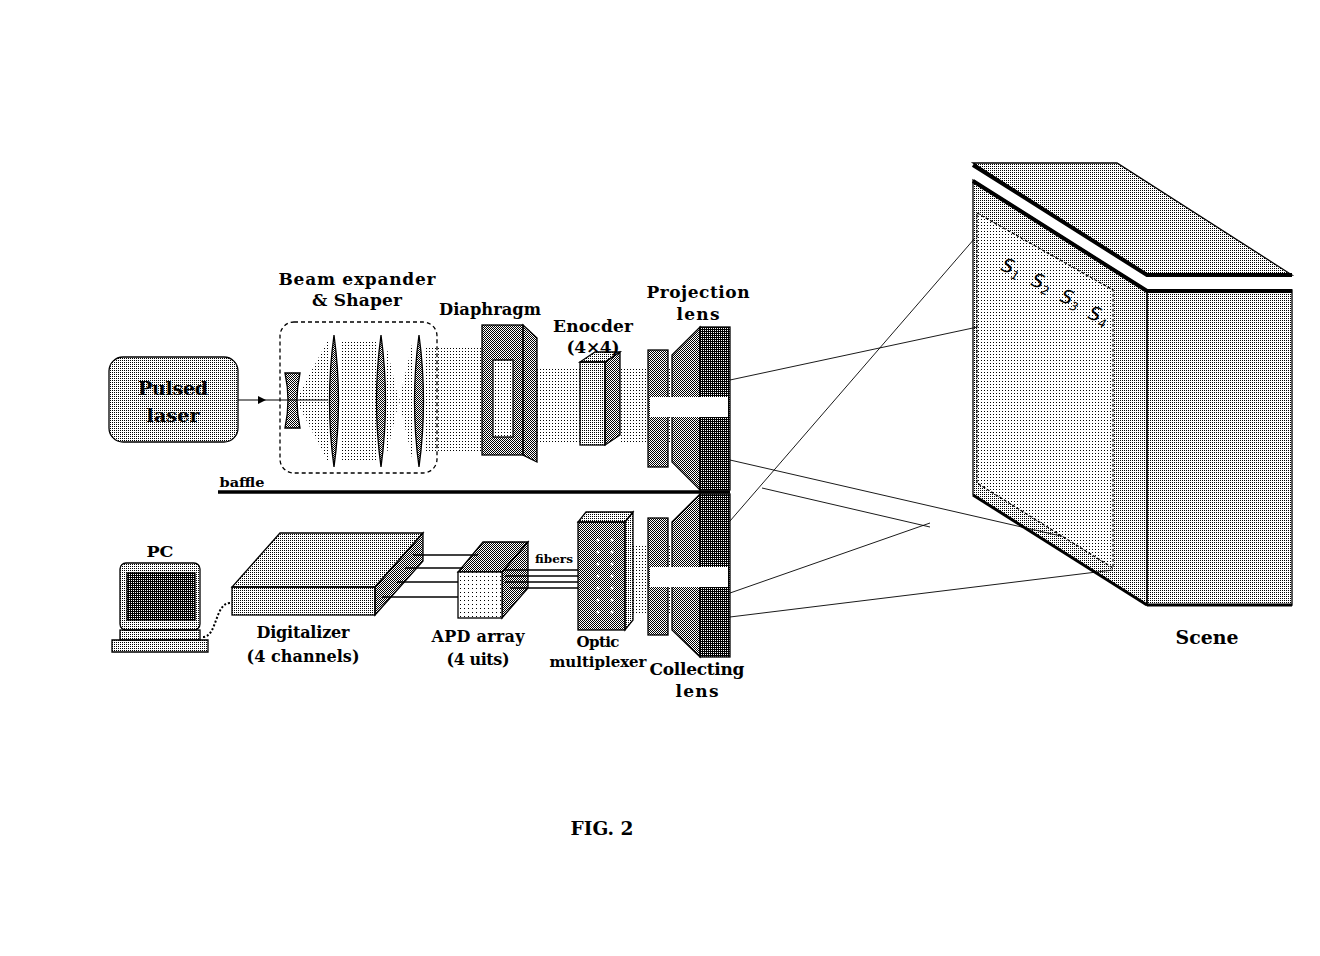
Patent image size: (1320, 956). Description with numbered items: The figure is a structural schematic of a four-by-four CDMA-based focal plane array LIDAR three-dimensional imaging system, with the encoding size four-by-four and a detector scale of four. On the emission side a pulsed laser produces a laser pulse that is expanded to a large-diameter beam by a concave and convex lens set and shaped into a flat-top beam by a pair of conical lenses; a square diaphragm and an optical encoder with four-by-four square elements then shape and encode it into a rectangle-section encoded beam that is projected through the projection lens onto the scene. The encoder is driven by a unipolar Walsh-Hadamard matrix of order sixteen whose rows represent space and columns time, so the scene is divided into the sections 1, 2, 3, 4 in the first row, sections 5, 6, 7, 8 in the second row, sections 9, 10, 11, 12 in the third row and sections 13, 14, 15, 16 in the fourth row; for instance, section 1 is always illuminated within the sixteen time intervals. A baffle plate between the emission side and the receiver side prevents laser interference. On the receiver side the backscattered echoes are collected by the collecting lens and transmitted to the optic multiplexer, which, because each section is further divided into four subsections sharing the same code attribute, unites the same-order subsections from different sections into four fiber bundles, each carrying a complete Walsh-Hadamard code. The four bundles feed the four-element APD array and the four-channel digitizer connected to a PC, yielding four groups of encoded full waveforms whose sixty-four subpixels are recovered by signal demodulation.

The scene section S1 1 is at (445, 561).
The scene section S2 2 is at (434, 575).
The scene section S3 3 is at (427, 589).
The scene section S4 4 is at (420, 603).
The scene section S5 5 is at (1010, 331).
The scene section S6 6 is at (1040, 348).
The scene section S7 7 is at (1068, 364).
The scene section S8 8 is at (1097, 379).
The scene section S9 9 is at (1010, 399).
The scene section S10 10 is at (1042, 415).
The scene section S11 11 is at (1071, 430).
The scene section S12 12 is at (1101, 445).
The scene section S13 13 is at (1012, 476).
The scene section S14 14 is at (1041, 491).
The scene section S15 15 is at (1070, 509).
The scene section S16 16 is at (1100, 528).